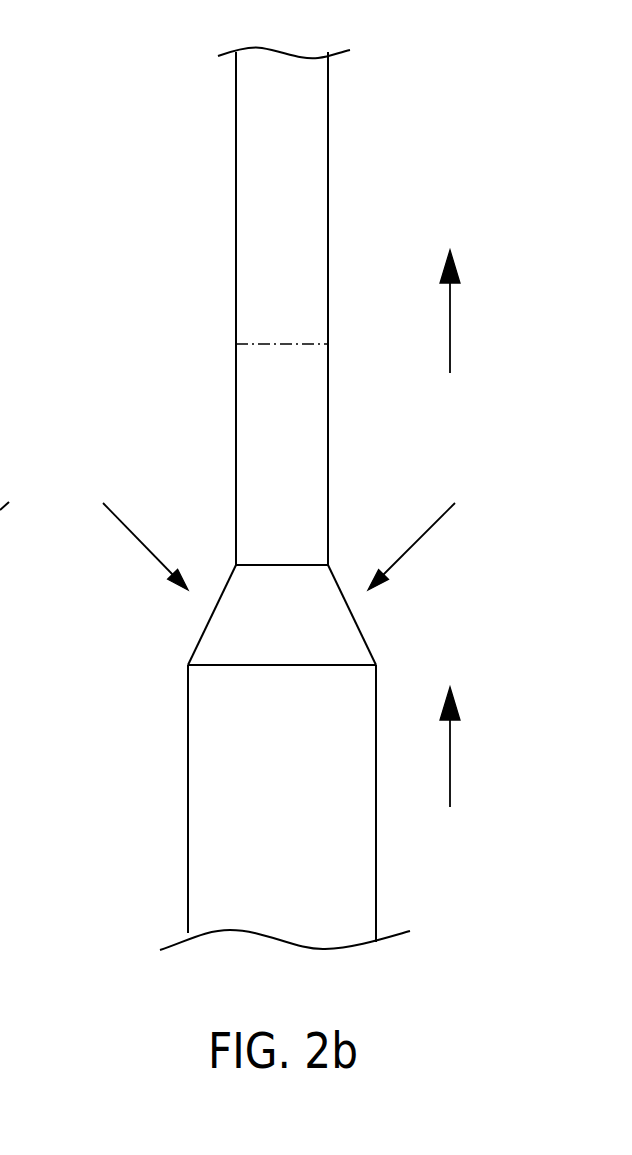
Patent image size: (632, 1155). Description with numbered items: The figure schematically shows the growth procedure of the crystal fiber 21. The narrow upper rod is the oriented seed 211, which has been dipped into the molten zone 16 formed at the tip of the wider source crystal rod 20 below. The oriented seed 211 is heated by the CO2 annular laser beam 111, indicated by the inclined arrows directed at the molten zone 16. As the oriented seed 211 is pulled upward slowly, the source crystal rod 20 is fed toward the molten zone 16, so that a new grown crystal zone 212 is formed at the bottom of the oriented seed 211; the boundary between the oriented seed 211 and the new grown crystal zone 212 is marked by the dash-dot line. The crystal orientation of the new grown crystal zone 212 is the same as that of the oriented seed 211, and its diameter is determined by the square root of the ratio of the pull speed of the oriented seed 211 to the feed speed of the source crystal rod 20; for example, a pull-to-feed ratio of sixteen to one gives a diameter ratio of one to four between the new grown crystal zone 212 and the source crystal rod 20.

The crystal fiber 21 is at (187, 306).
The oriented seed 211 is at (257, 233).
The new grown crystal zone 212 is at (257, 421).
The molten zone 16 is at (230, 622).
The source crystal rod 20 is at (207, 757).
The CO2 annular laser beam 111 is at (420, 535).